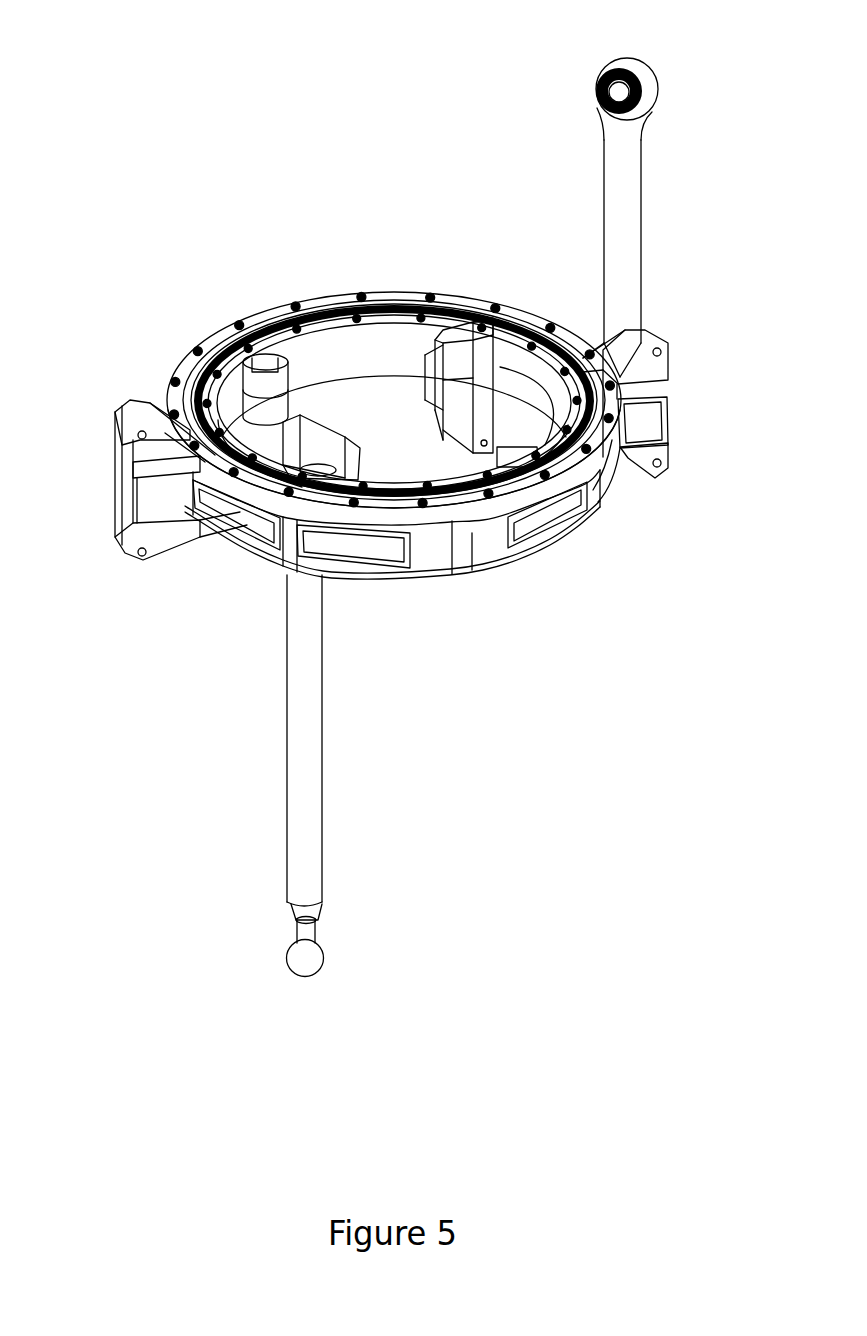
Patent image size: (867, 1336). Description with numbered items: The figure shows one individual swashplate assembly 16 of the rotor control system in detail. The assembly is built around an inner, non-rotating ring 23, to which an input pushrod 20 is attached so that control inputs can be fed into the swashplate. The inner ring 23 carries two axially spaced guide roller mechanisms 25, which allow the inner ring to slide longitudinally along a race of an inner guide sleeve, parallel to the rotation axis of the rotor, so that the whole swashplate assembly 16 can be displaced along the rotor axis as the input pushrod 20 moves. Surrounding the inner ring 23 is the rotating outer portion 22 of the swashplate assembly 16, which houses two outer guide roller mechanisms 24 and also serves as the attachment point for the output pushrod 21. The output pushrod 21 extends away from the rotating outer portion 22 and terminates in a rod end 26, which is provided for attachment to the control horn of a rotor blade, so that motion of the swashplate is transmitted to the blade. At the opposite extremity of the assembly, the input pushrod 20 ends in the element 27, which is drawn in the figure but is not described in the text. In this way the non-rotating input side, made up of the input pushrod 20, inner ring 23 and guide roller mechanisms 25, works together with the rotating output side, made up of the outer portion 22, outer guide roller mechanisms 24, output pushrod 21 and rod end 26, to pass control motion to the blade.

The swashplate assembly 16 is at (330, 54).
The input pushrod 20 is at (281, 748).
The output pushrod 21 is at (648, 230).
The rotating outer portion 22 is at (431, 550).
The inner, non-rotating ring 23 is at (335, 357).
The outer guide roller mechanism 24 is at (112, 424).
The guide roller mechanism 25 is at (468, 312).
The rod end 26 is at (630, 82).
The ball end 27 is at (281, 964).